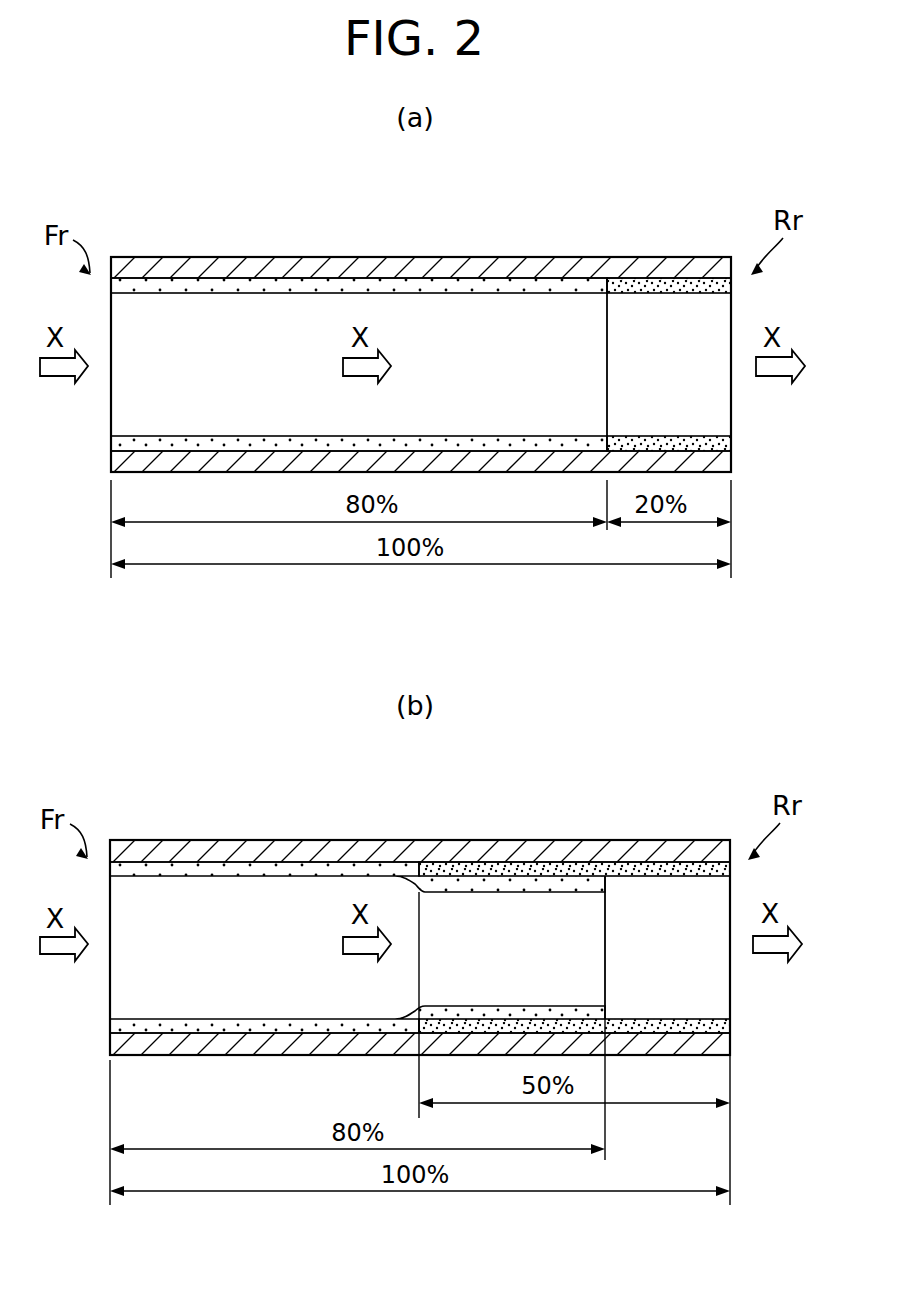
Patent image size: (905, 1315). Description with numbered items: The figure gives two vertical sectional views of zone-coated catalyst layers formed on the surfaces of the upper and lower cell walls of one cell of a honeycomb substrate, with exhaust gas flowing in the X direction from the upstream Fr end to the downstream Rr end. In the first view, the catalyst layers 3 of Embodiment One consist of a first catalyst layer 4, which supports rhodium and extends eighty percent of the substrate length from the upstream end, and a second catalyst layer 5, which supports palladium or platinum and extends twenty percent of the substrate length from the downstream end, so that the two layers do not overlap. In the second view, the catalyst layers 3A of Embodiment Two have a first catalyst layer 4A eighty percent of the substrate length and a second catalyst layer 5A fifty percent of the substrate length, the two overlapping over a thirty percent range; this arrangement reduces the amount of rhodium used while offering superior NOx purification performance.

The catalyst layers 3 is at (421, 305).
The first catalyst layer 4 is at (531, 276).
The second catalyst layer 5 is at (654, 325).
The catalyst layers 3A is at (420, 887).
The first catalyst layer 4A is at (389, 865).
The second catalyst layer 5A is at (486, 867).